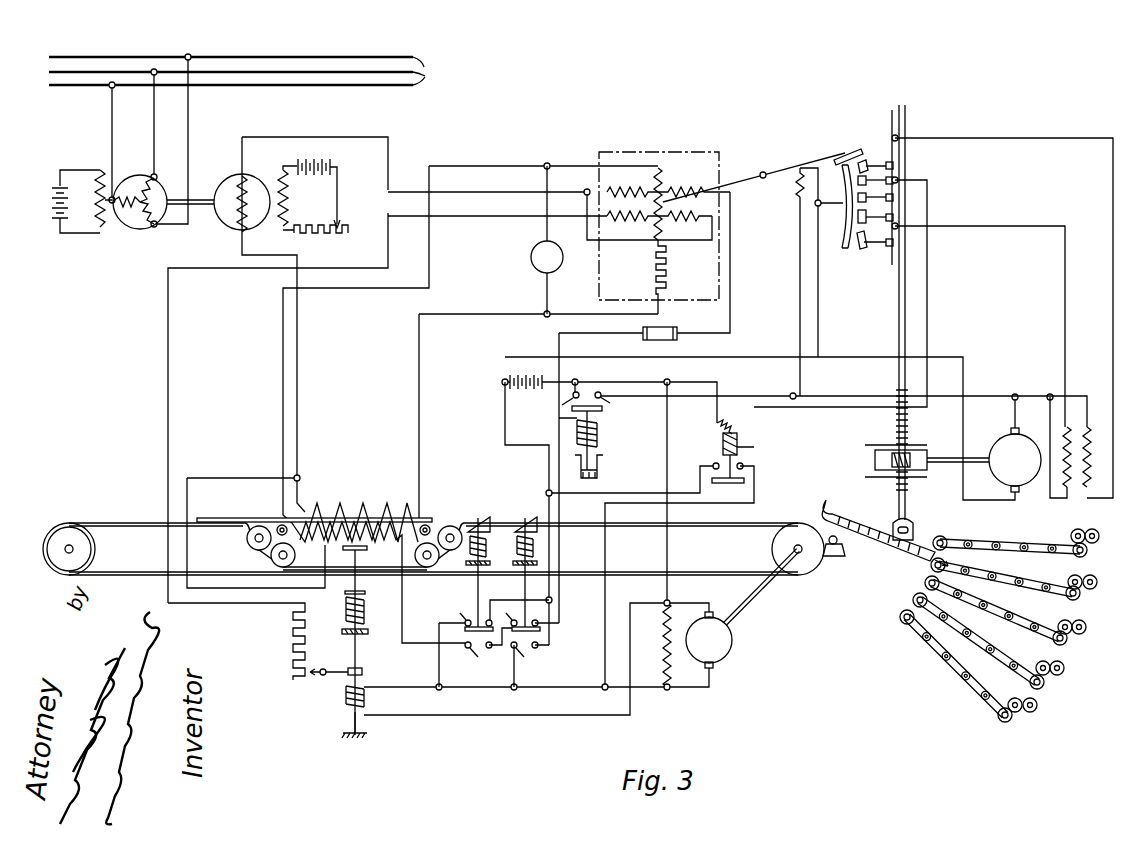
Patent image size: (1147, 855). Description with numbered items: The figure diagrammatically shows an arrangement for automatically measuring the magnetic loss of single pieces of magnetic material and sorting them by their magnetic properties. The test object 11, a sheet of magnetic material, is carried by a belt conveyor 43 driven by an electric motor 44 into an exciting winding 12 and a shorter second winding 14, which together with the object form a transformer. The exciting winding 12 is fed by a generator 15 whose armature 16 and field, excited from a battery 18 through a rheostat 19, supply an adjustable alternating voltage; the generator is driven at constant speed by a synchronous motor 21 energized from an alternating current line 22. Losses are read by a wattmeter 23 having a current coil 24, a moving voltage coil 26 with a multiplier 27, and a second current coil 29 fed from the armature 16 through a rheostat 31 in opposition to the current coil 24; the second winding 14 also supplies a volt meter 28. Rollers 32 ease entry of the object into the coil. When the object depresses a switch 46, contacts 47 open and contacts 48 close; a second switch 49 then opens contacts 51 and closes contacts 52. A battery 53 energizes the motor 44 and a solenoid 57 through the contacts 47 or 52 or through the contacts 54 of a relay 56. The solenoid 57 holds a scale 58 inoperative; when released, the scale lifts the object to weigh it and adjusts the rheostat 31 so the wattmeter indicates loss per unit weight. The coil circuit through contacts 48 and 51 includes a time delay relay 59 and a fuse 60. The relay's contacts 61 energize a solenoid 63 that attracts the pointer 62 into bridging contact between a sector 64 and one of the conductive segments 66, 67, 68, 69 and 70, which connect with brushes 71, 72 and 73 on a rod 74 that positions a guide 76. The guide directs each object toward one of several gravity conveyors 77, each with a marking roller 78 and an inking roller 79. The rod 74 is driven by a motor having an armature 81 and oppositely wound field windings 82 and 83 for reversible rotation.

The test object 11 is at (314, 510).
The exciting winding 12 is at (355, 509).
The second winding 14 is at (382, 562).
The generator 15 is at (278, 370).
The armature 16 is at (242, 194).
The battery 18 is at (319, 183).
The rheostat 19 is at (322, 241).
The synchronous motor 21 is at (89, 211).
The alternating current line 22 is at (248, 71).
The wattmeter 23 is at (648, 232).
The current coil 24 is at (694, 182).
The voltage coil 26 is at (670, 195).
The multiplier 27 is at (646, 277).
The volt meter 28 is at (537, 240).
The second current coil 29 is at (685, 227).
The rheostat 31 is at (258, 641).
The rollers 32 is at (348, 515).
The conveyor belt 43 is at (433, 549).
The electric motor 44 is at (581, 548).
The switch 46 is at (478, 562).
The contacts 47 is at (494, 643).
The contacts 48 is at (486, 651).
The second switch 49 is at (525, 562).
The contacts 51 is at (527, 615).
The contacts 52 is at (530, 664).
The battery 53 is at (609, 390).
The contacts 54 is at (690, 567).
The relay 56 is at (720, 449).
The solenoid 57 is at (338, 712).
The scale 58 is at (364, 640).
The time delay relay 59 is at (595, 478).
The fuse 60 is at (644, 276).
The contacts 61 is at (583, 400).
The pointer 62 is at (754, 170).
The solenoid 63 is at (803, 282).
The sector 64 is at (837, 206).
The conductive segment 66 is at (853, 146).
The conductive segment 67 is at (875, 157).
The conductive segment 68 is at (875, 205).
The conductive segment 69 is at (875, 224).
The conductive segment 70 is at (875, 250).
The brush 71 is at (879, 148).
The brush 72 is at (894, 170).
The brush 73 is at (881, 238).
The rod 74 is at (927, 322).
The guide 76 is at (885, 539).
The conveyors 77 is at (993, 621).
The marking roller 78 is at (1046, 624).
The inking roller 79 is at (1075, 615).
The armature 81 is at (775, 436).
The field winding 82 is at (1074, 471).
The field winding 83 is at (1111, 457).